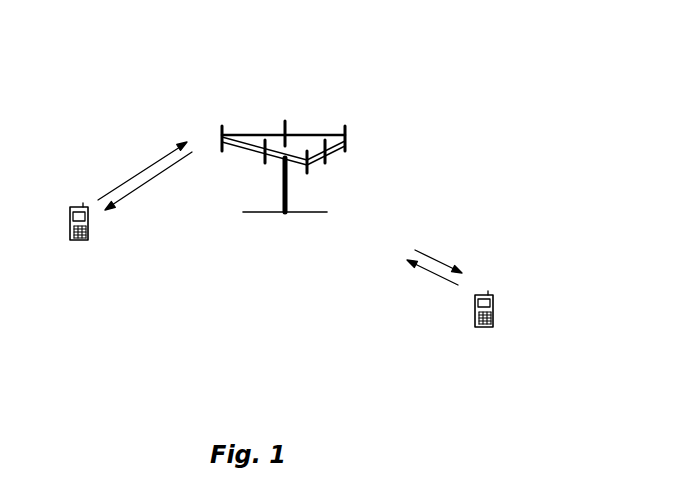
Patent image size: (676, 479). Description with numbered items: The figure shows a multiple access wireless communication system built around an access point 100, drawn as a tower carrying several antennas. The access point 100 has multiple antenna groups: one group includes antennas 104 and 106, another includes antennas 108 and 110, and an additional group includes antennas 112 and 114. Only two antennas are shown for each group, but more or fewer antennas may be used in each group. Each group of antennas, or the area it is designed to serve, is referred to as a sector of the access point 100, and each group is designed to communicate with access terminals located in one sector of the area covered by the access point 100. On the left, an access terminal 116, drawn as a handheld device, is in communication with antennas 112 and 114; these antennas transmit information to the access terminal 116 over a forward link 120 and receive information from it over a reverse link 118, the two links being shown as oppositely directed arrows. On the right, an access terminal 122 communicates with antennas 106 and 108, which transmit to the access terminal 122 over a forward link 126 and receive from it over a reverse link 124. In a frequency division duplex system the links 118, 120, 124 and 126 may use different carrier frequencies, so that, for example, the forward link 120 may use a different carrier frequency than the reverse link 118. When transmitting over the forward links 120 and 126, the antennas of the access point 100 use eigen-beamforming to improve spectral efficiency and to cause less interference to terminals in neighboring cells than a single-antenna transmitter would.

The access point 100 is at (267, 212).
The antenna 104 is at (306, 172).
The antenna 106 is at (326, 162).
The antenna 108 is at (346, 143).
The antenna 110 is at (228, 134).
The antenna 112 is at (226, 133).
The antenna 114 is at (264, 165).
The access terminal 116 is at (84, 207).
The reverse link 118 is at (144, 167).
The forward link 120 is at (155, 178).
The access terminal 122 is at (487, 293).
The reverse link 124 is at (423, 268).
The forward link 126 is at (441, 262).